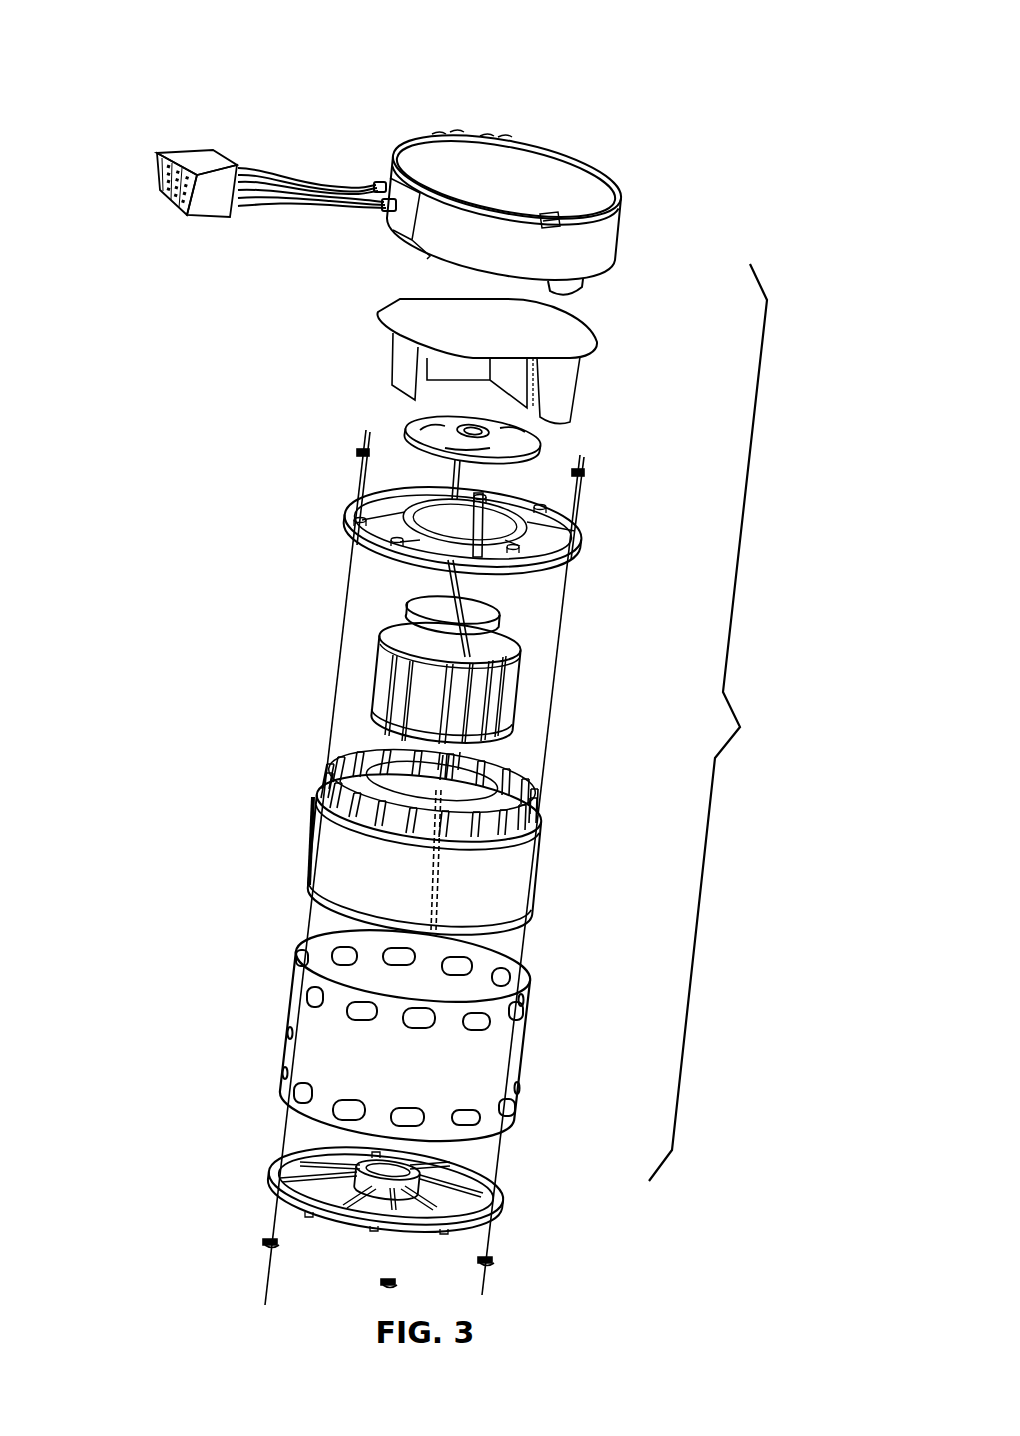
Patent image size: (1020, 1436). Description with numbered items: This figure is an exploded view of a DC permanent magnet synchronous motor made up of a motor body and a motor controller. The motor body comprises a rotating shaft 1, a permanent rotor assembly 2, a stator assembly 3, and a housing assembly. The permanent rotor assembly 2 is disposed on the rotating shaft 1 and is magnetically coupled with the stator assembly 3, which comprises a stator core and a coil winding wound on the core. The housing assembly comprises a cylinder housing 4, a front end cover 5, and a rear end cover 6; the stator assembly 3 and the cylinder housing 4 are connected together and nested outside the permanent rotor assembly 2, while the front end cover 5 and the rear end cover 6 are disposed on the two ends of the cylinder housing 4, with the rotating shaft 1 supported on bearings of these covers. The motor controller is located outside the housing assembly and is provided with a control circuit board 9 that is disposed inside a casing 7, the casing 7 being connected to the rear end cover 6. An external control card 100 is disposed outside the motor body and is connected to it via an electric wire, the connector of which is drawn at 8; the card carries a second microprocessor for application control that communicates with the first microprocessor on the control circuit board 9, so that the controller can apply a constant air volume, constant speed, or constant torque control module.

The external control card 100 is at (158, 150).
The rotating shaft 1 is at (437, 787).
The permanent rotor assembly 2 is at (468, 712).
The stator assembly 3 is at (507, 863).
The cylinder housing 4 is at (435, 1063).
The front end cover 5 is at (498, 1192).
The rear end cover 6 is at (568, 537).
The casing 7 is at (545, 180).
The connector 8 is at (203, 197).
The control circuit board 9 is at (538, 332).